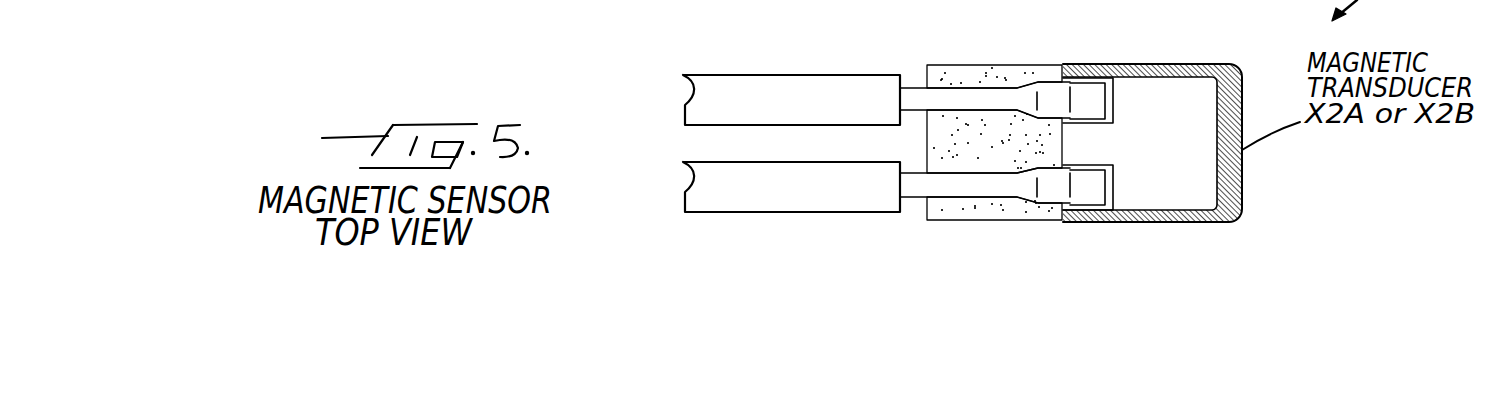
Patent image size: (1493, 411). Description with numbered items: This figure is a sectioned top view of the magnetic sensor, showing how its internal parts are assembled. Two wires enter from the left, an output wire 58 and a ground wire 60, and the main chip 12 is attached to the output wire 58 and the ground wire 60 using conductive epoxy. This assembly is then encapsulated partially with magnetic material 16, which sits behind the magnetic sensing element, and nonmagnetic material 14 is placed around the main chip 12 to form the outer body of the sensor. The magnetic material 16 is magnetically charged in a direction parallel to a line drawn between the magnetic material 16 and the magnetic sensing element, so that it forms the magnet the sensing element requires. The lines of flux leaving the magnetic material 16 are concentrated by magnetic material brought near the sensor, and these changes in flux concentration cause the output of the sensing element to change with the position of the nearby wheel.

The main chip 12 is at (1145, 186).
The nonmagnetic material 14 is at (1208, 222).
The magnetic material 16 is at (984, 210).
The output wire 58 is at (997, 97).
The ground wire 60 is at (922, 190).